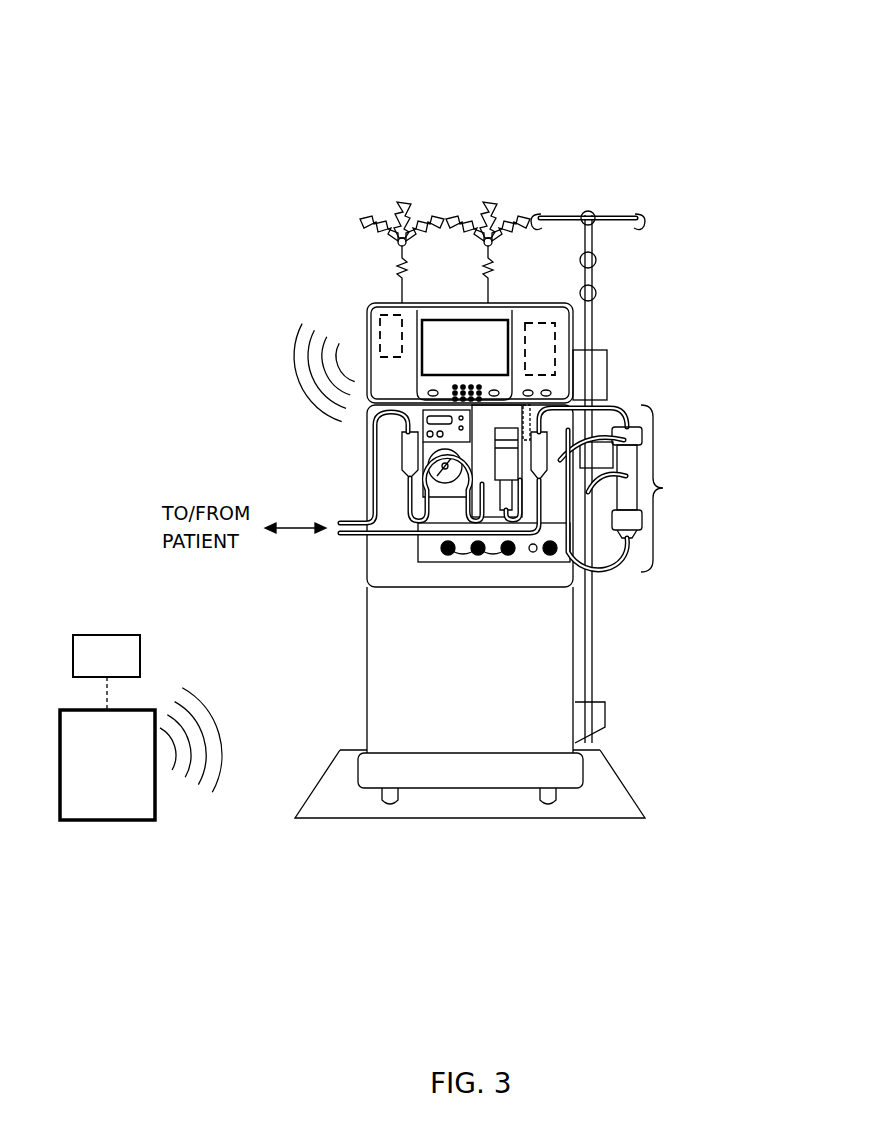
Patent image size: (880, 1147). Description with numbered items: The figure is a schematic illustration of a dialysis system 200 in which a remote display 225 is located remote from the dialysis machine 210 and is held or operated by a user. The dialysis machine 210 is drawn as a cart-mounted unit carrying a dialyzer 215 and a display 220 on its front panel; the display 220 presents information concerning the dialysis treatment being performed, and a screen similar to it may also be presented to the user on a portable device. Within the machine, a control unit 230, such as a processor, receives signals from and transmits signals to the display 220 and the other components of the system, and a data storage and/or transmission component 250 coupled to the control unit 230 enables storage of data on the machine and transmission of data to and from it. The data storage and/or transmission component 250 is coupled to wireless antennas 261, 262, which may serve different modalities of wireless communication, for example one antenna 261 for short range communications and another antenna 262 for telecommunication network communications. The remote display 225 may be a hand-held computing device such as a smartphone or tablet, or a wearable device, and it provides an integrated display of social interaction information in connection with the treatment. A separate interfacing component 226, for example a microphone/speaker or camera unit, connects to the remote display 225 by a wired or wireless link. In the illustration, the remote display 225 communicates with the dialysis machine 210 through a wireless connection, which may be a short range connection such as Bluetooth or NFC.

The dialysis system 200 is at (700, 146).
The dialysis machine 210 is at (557, 731).
The dialyzer 215 is at (663, 488).
The display 220 is at (485, 360).
The remote display 225 is at (125, 774).
The separate interfacing components 226 is at (125, 667).
The control unit 230 is at (555, 350).
The data storage and/or transmission component 250 is at (380, 333).
The wireless antenna 261 is at (396, 270).
The wireless antenna 262 is at (483, 270).